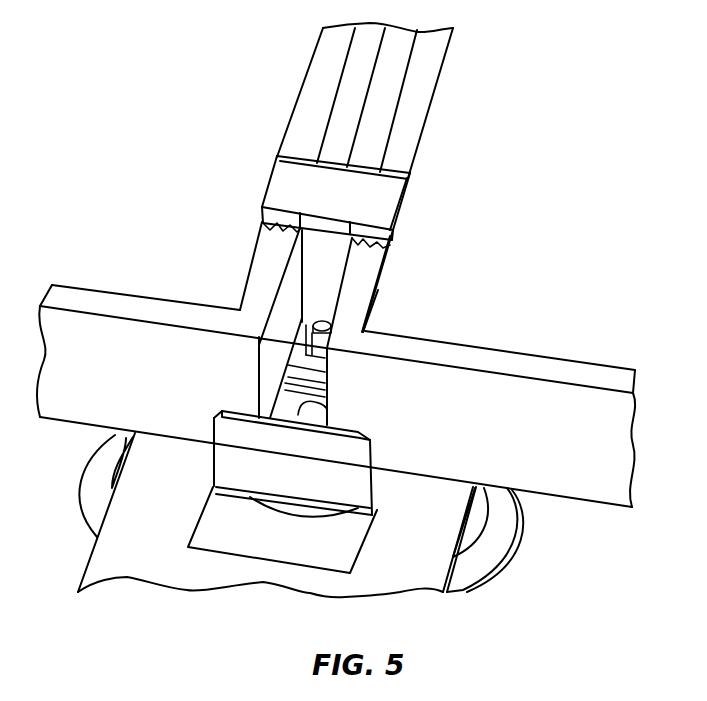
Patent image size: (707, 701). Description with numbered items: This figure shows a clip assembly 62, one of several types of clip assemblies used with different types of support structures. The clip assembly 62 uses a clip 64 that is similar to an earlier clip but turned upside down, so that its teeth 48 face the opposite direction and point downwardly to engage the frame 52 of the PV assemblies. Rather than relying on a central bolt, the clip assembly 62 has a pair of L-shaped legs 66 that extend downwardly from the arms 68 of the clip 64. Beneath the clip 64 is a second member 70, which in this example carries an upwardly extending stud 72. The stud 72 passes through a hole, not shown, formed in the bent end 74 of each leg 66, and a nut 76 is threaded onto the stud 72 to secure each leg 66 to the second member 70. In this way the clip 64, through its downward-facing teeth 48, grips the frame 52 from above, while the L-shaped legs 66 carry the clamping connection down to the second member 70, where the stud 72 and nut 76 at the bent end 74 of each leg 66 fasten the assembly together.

The teeth 48 is at (378, 258).
The frame 52 is at (538, 367).
The clip assembly 62 is at (437, 202).
The clip 64 is at (356, 204).
The L-shaped legs 66 is at (327, 252).
The arms 68 is at (382, 229).
The second member 70 is at (177, 513).
The stud 72 is at (332, 322).
The bent end 74 is at (292, 358).
The nut 76 is at (292, 340).